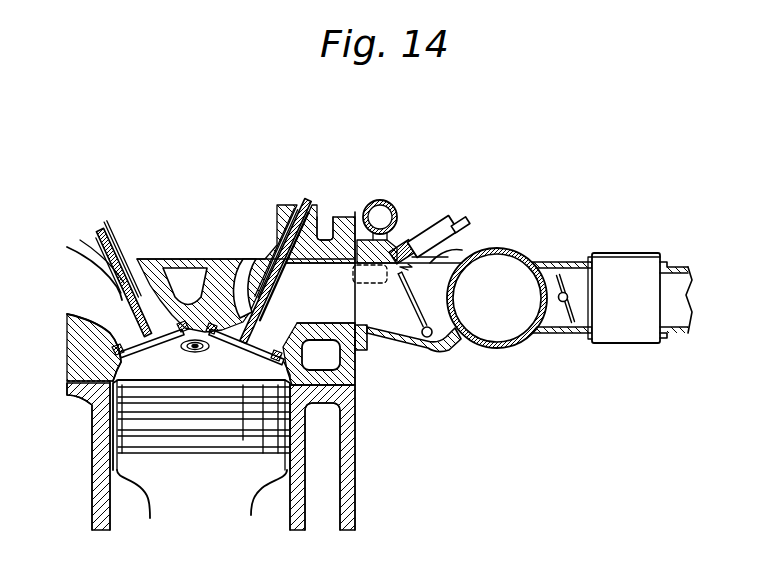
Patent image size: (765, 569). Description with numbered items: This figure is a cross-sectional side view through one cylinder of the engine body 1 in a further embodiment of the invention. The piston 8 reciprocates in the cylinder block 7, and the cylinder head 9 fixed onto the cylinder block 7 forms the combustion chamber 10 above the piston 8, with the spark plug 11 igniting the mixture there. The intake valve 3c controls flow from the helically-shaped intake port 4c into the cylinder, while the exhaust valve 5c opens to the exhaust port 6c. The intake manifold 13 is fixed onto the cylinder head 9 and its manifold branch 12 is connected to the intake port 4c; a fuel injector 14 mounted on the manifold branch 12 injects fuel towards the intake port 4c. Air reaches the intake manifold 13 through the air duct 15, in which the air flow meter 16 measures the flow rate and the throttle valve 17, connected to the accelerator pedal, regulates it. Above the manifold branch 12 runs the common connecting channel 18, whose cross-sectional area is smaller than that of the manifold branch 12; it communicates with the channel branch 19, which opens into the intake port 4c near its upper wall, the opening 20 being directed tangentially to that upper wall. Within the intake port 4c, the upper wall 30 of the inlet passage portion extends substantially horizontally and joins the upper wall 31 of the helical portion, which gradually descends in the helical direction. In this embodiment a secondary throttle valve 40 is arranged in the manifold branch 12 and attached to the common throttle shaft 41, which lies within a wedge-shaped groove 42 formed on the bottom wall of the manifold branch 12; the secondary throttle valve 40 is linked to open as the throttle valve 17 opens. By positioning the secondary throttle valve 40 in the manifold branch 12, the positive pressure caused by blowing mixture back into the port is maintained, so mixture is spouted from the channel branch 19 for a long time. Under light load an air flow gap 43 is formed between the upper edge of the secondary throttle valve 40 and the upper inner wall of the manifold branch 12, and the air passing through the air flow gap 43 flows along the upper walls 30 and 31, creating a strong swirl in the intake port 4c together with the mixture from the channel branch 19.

The engine body 1 is at (360, 410).
The intake valve 3c is at (228, 295).
The intake port 4c is at (333, 307).
The exhaust valve 5c is at (150, 290).
The exhaust port 6c is at (91, 291).
The cylinder block 7 is at (357, 510).
The piston 8 is at (243, 497).
The cylinder head 9 is at (275, 240).
The combustion chamber 10 is at (241, 373).
The spark plug 11 is at (192, 354).
The manifold branch 12 is at (371, 345).
The intake manifold 13 is at (495, 349).
The fuel injector 14 is at (437, 222).
The air duct 15 is at (557, 335).
The air flow meter 16 is at (626, 343).
The throttle valve 17 is at (575, 336).
The common connecting channel 18 is at (380, 200).
The channel branch 19 is at (372, 285).
The opening 20 is at (328, 237).
The upper wall of inlet passage portion 30 is at (316, 212).
The upper wall of helical portion 31 is at (252, 262).
The secondary throttle valve 40 is at (414, 297).
The common throttle shaft 41 is at (430, 340).
The wedge-shaped groove 42 is at (401, 339).
The air flow gap 43 is at (452, 252).